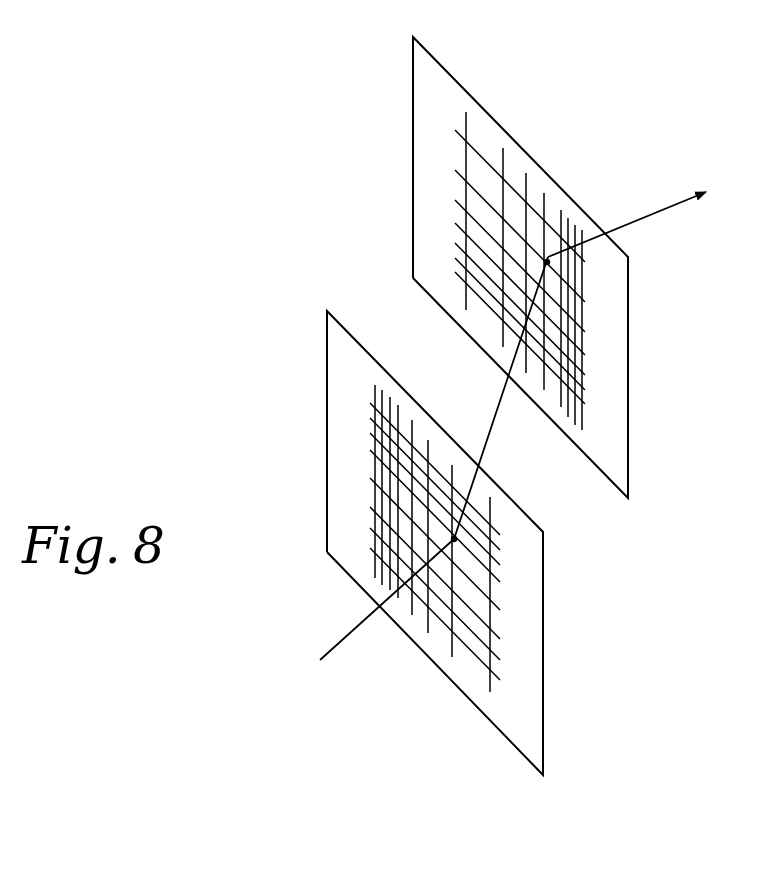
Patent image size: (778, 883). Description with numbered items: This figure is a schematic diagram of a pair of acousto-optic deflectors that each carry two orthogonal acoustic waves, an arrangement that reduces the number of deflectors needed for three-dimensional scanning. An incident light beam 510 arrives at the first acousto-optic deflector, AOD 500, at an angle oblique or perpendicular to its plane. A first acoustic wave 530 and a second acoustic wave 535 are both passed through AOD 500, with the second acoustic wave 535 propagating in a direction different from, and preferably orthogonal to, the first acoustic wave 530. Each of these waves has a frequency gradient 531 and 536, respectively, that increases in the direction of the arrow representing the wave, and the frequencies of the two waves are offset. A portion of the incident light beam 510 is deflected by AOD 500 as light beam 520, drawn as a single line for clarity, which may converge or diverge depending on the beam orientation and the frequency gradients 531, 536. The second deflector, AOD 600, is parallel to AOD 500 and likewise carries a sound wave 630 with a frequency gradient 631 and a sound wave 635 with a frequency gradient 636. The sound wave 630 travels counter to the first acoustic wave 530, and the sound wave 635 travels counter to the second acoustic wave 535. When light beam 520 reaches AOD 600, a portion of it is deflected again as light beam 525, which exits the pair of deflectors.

The acousto-optic deflector 500 is at (337, 350).
The incident light beam 510 is at (340, 643).
The light beam 520 is at (492, 450).
The light beam 525 is at (652, 212).
The first acoustic wave 530 is at (426, 684).
The frequency gradient 531 is at (493, 592).
The second acoustic wave 535 is at (559, 665).
The frequency gradient 536 is at (402, 423).
The acousto-optic deflector 600 is at (420, 70).
The sound wave 630 is at (532, 126).
The frequency gradient 631 is at (590, 342).
The sound wave 635 is at (389, 162).
The frequency gradient 636 is at (485, 320).